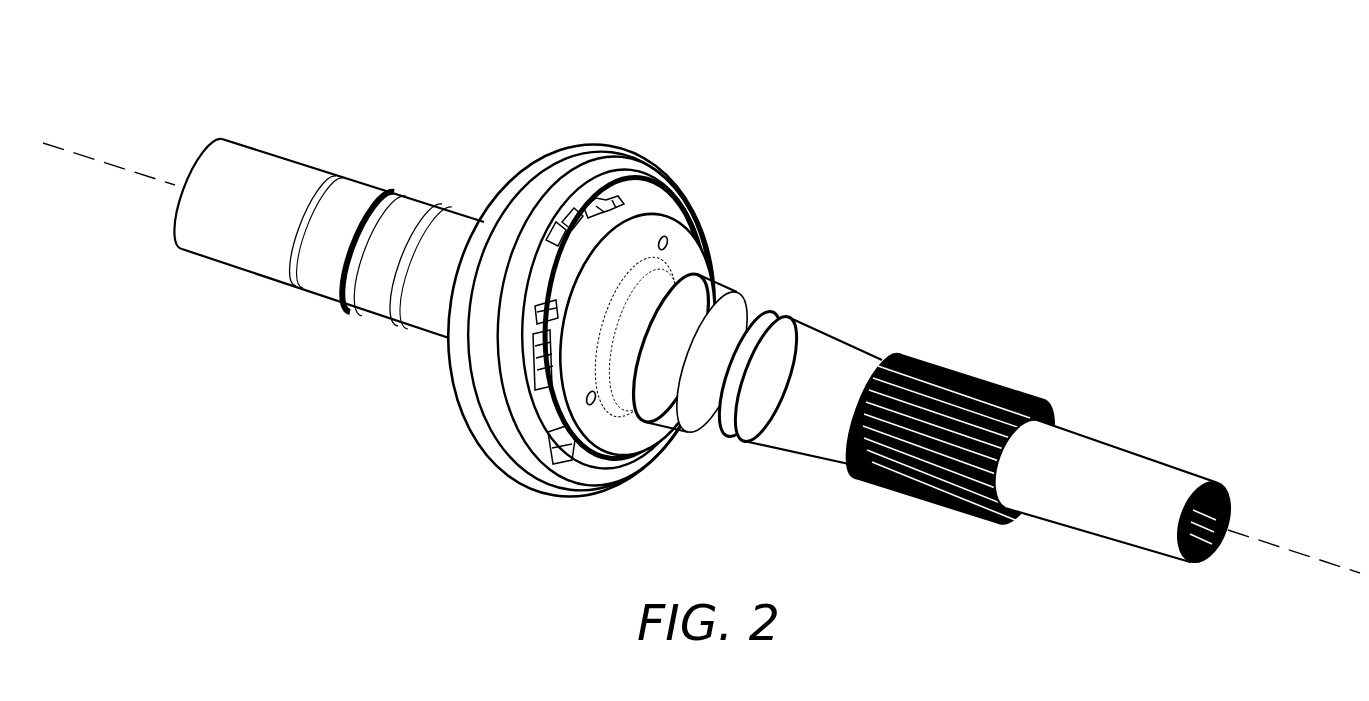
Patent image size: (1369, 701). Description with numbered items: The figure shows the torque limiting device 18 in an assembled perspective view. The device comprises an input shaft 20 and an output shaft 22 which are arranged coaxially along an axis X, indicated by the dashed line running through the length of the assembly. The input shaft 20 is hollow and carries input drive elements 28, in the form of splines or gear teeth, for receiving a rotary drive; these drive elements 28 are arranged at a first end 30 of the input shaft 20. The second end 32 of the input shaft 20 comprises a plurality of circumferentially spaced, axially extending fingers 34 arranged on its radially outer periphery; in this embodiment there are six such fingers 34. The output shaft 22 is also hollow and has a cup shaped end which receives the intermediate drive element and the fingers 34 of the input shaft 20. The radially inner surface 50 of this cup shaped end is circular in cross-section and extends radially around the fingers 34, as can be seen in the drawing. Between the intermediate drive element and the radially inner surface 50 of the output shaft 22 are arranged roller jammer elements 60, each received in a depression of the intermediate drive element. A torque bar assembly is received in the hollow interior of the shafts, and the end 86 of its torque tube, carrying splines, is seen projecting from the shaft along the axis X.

The torque limiting device 18 is at (747, 92).
The input shaft 20 is at (845, 343).
The output shaft 22 is at (270, 163).
The input drive elements 28 is at (1000, 388).
The first end 30 is at (934, 362).
The second end 32 is at (716, 215).
The fingers 34 is at (542, 400).
The radially inner surface 50 is at (637, 193).
The roller jammer element 60 is at (585, 208).
The end 86 is at (1203, 563).
The axis X is at (1293, 553).